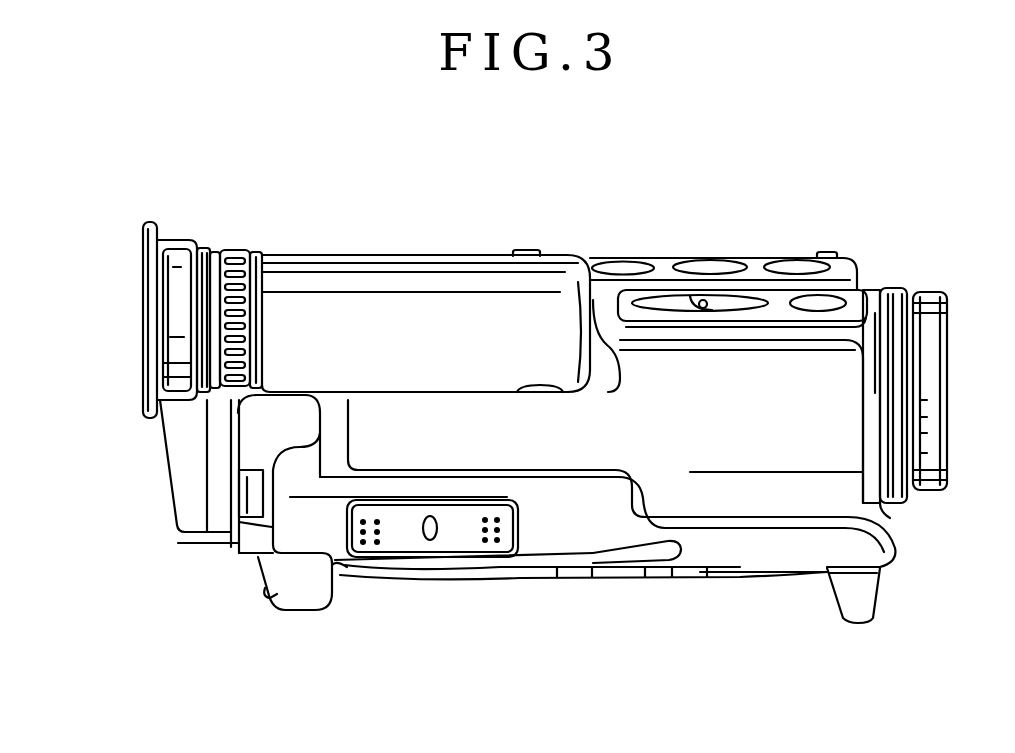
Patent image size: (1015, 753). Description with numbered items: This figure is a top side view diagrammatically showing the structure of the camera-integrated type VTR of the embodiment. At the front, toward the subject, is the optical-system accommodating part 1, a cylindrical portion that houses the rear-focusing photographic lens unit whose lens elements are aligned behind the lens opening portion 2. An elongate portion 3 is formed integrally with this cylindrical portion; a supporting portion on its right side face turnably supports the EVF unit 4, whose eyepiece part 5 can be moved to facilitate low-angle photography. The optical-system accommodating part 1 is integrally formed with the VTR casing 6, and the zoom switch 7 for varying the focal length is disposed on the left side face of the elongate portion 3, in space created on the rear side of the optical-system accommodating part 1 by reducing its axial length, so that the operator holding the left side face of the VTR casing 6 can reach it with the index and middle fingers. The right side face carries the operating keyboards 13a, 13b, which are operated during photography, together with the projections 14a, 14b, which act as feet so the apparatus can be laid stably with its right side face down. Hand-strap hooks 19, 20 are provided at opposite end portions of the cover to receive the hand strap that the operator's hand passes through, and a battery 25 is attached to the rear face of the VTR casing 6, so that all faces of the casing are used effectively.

The optical-system accommodating part 1 is at (800, 370).
The lens opening portion 2 is at (933, 377).
The elongate portion 3 is at (483, 412).
The EVF unit 4 is at (393, 313).
The eyepiece part 5 is at (167, 299).
The VTR casing 6 is at (715, 537).
The zoom switch 7 is at (458, 535).
The operating keyboard 13a is at (775, 297).
The operating keyboard 13b is at (665, 267).
The projection 14a is at (534, 249).
The projection 14b is at (829, 252).
The hand-strap hook 19 is at (293, 590).
The hand-strap hook 20 is at (865, 597).
The battery 25 is at (160, 427).